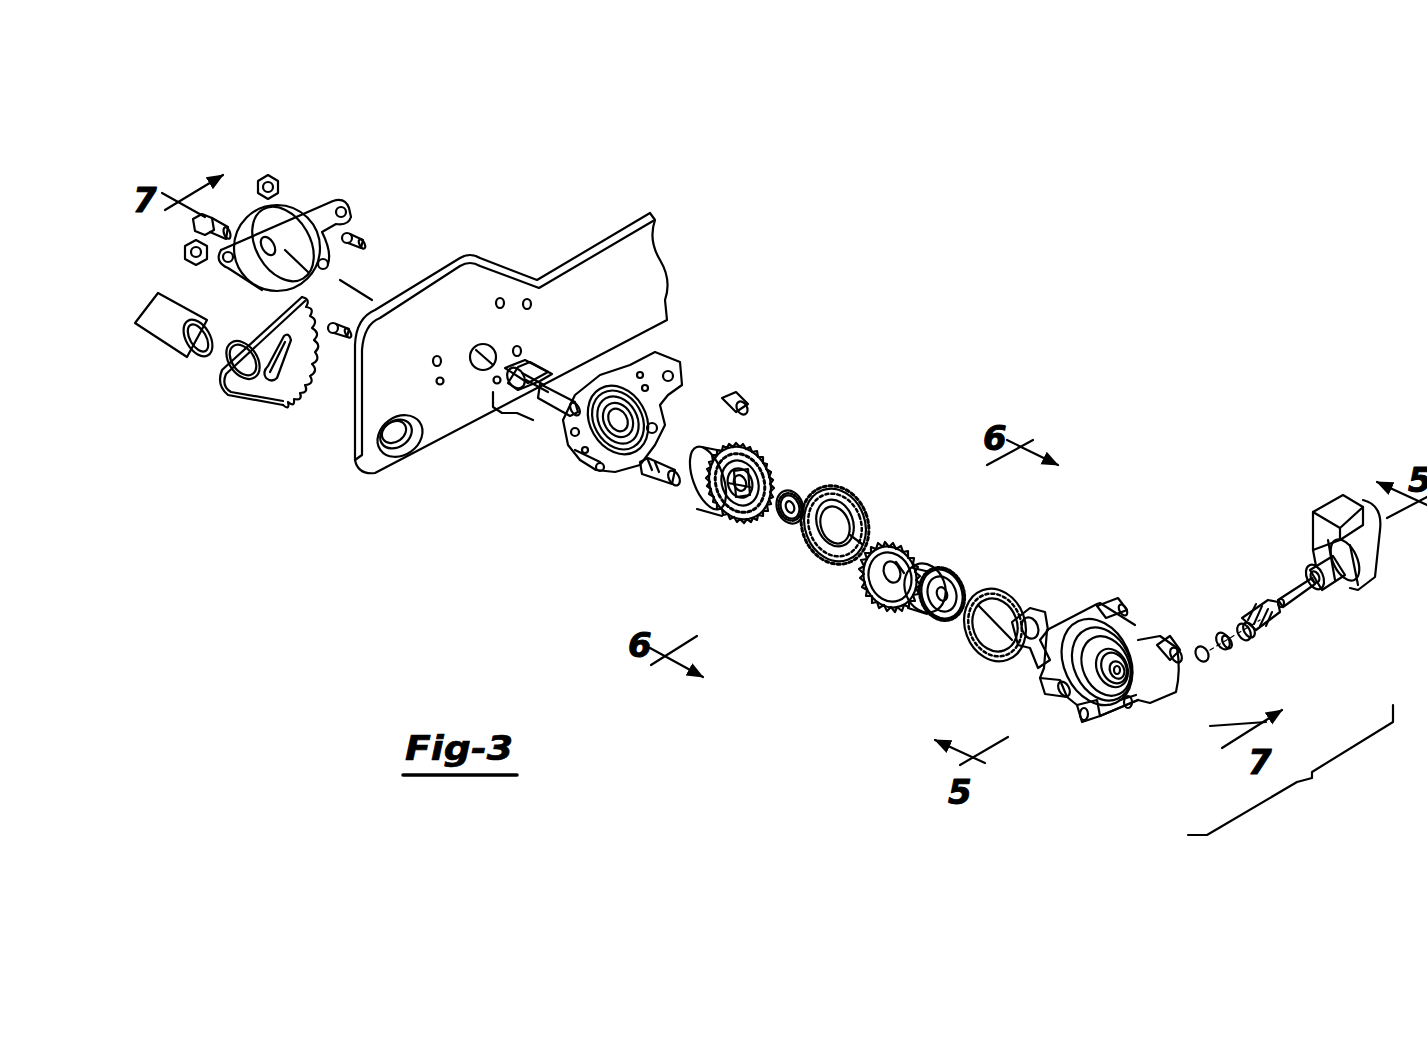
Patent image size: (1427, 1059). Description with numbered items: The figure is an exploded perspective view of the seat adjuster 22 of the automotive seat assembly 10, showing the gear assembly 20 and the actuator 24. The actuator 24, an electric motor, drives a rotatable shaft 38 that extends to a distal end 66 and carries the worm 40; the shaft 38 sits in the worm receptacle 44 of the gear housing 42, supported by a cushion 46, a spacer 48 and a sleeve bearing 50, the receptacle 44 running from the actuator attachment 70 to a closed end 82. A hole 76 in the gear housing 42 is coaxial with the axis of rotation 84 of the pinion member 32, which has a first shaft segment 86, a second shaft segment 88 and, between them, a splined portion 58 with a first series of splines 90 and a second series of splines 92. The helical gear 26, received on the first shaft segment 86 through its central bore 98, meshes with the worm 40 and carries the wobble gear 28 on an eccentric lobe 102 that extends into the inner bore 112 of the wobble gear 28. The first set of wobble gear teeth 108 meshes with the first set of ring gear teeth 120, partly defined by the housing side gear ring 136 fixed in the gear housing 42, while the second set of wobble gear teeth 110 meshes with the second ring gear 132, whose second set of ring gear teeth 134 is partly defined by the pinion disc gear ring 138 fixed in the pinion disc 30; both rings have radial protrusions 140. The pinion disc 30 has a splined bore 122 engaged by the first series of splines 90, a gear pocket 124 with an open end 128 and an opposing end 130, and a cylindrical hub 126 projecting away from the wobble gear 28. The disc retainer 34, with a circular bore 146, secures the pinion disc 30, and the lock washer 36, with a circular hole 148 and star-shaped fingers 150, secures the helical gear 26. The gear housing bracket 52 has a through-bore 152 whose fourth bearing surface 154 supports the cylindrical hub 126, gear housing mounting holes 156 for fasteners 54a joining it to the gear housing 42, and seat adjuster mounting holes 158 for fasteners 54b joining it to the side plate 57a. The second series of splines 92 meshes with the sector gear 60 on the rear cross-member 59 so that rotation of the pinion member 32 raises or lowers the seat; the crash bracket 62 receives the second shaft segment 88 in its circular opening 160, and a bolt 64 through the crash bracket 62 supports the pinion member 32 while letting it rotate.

The automotive seat assembly 10 is at (218, 450).
The gear assembly 20 is at (1188, 755).
The seat adjuster 22 is at (1290, 770).
The actuator 24 is at (1315, 475).
The helical gear 26 is at (970, 560).
The wobble gear 28 is at (898, 530).
The pinion disc 30 is at (705, 520).
The pinion member 32 is at (533, 435).
The disc retainer 34 is at (783, 530).
The lock washer 36 is at (1050, 605).
The rotatable shaft 38 is at (1292, 592).
The worm 40 is at (1247, 600).
The gear housing 42 is at (1060, 705).
The worm receptacle 44 is at (1115, 714).
The cushion 46 is at (1208, 668).
The spacer 48 is at (1215, 628).
The sleeve bearing 50 is at (1243, 642).
The gear housing bracket 52 is at (641, 357).
The fasteners 54a is at (352, 236).
The fasteners 54b is at (733, 398).
The side plate 57a is at (657, 238).
The splined portion 58 is at (509, 415).
The rear cross-member 59 is at (163, 340).
The sector gear 60 is at (250, 390).
The crash bracket 62 is at (293, 197).
The bolt 64 is at (222, 228).
The distal end 66 is at (1283, 606).
The actuator attachment 70 is at (1172, 692).
The hole 76 is at (1140, 712).
The closed end 82 is at (1100, 714).
The axis of rotation 84 is at (360, 292).
The first shaft segment 86 is at (565, 394).
The second shaft segment 88 is at (512, 368).
The first series of splines 90 is at (550, 376).
The second series of splines 92 is at (533, 370).
The central bore 98 is at (945, 622).
The eccentric lobe 102 is at (925, 580).
The first set of wobble gear teeth 108 is at (882, 604).
The second set of wobble gear teeth 110 is at (870, 600).
The inner bore 112 is at (895, 584).
The first set of ring gear teeth 120 is at (1012, 592).
The splined bore 122 is at (782, 480).
The gear pocket 124 is at (740, 517).
The cylindrical hub 126 is at (700, 482).
The open end 128 is at (745, 506).
The opposing end 130 is at (725, 512).
The second ring gear 132 is at (766, 455).
The second set of ring gear teeth 134 is at (752, 517).
The housing side gear ring 136 is at (1038, 592).
The pinion disc gear ring 138 is at (870, 508).
The protrusions 140 is at (800, 562).
The circular bore 146 is at (805, 498).
The circular hole 148 is at (1100, 612).
The star-shaped fingers 150 is at (1034, 657).
The through-bore 152 is at (626, 415).
The fourth bearing surface 154 is at (592, 452).
The gear housing mounting holes 156 is at (650, 372).
The seat adjuster mounting holes 158 is at (677, 370).
The circular opening 160 is at (277, 243).